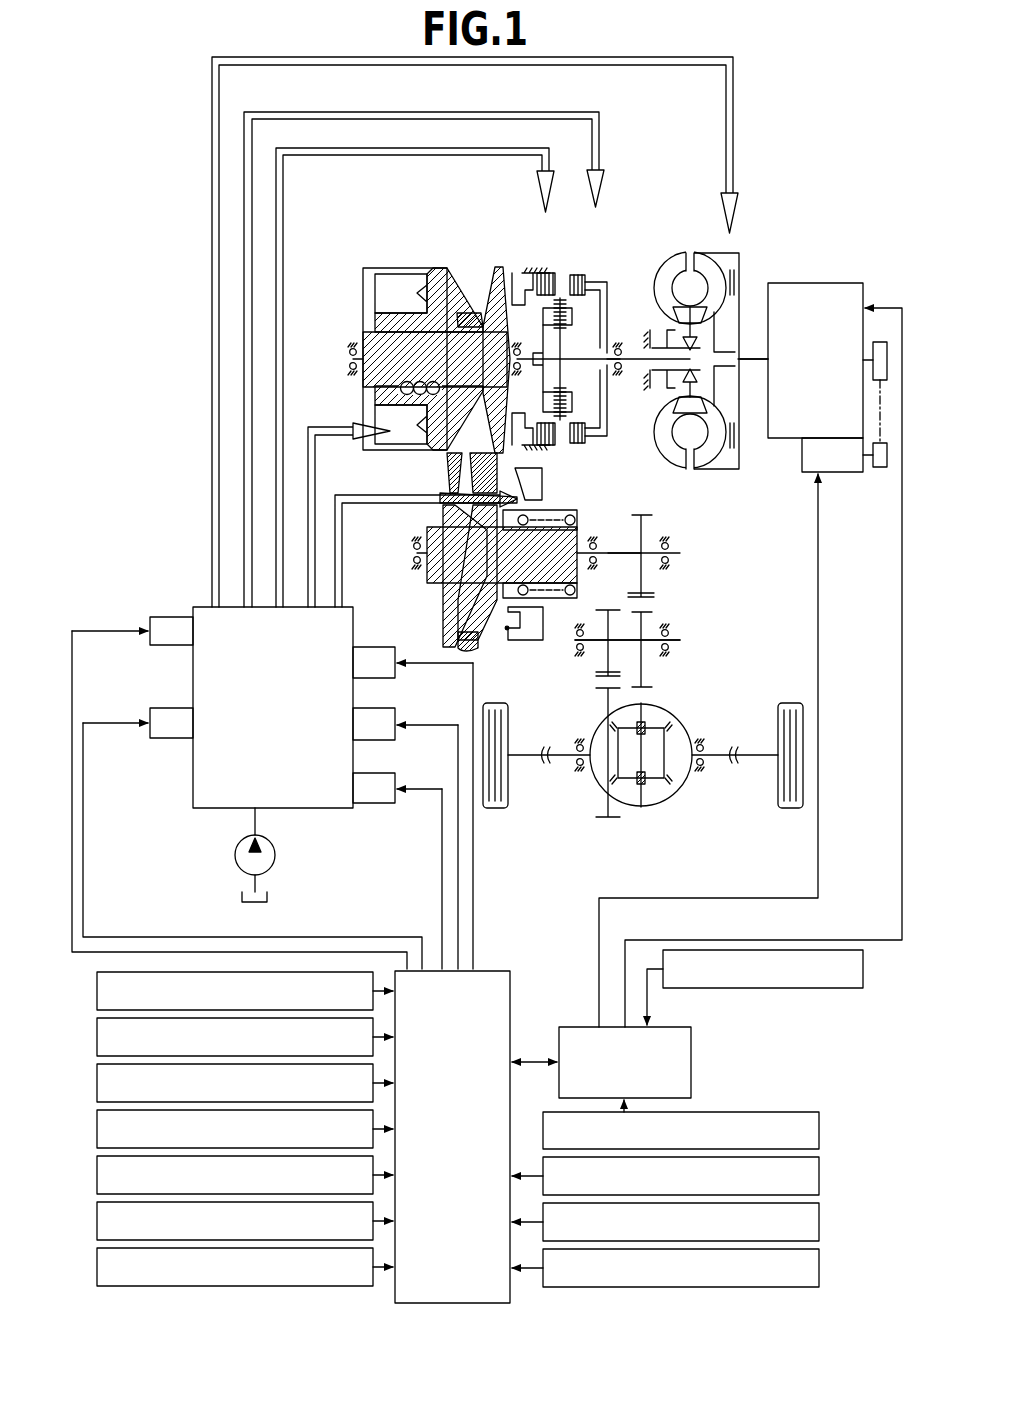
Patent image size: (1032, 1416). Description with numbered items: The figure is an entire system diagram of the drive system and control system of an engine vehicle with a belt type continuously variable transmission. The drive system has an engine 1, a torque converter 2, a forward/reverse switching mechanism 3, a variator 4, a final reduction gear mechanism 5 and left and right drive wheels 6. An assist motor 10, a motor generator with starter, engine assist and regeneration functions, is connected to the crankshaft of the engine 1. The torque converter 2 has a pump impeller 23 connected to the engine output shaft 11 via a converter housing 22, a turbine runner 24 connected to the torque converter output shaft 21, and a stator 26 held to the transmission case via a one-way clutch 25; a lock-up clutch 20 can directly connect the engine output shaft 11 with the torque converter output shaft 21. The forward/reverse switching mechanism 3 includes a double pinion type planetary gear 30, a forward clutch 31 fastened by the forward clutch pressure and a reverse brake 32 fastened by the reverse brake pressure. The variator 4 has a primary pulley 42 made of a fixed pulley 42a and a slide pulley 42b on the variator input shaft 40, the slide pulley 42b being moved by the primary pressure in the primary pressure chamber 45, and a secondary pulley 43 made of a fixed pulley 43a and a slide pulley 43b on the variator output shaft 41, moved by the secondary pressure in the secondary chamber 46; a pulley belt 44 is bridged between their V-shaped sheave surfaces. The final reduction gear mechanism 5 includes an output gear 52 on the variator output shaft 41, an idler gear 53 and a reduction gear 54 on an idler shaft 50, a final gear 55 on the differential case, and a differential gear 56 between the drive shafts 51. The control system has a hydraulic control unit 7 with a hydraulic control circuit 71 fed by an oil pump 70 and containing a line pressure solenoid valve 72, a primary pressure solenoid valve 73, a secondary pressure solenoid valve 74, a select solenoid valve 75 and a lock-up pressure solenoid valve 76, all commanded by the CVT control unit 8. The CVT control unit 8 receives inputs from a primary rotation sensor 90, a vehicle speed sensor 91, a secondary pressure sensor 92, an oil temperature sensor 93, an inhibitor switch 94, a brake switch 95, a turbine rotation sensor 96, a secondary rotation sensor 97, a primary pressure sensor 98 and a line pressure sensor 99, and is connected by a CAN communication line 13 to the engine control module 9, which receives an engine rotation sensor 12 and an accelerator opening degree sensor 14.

The engine 1 is at (814, 280).
The torque converter 2 is at (688, 250).
The forward/reverse switching mechanism 3 is at (548, 260).
The variator 4 is at (407, 258).
The final reduction gear mechanism 5 is at (680, 618).
The drive wheels 6 is at (500, 811).
The hydraulic control unit 7 is at (163, 575).
The CVT control unit 8 is at (497, 967).
The engine control module 9 is at (693, 1058).
The assist motor 10 is at (830, 476).
The engine output shaft 11 is at (752, 362).
The engine rotation sensor 12 is at (830, 989).
The CAN communication line 13 is at (538, 1058).
The accelerator opening degree sensor 14 is at (820, 1133).
The lock-up clutch 20 is at (732, 309).
The torque converter output shaft 21 is at (635, 362).
The converter housing 22 is at (728, 250).
The pump impeller 23 is at (665, 262).
The turbine runner 24 is at (712, 452).
The one-way clutch 25 is at (690, 343).
The stator 26 is at (688, 311).
The double pinion type planetary gear 30 is at (560, 421).
The forward clutch 31 is at (580, 272).
The reverse brake 32 is at (546, 265).
The variator input shaft 40 is at (412, 368).
The variator output shaft 41 is at (619, 550).
The primary pulley 42 is at (400, 323).
The fixed pulley 42a is at (483, 265).
The slide pulley 42b is at (448, 266).
The secondary pulley 43 is at (517, 581).
The fixed pulley 43a is at (440, 604).
The slide pulley 43b is at (476, 648).
The pulley belt 44 is at (462, 469).
The primary pressure chamber 45 is at (394, 282).
The secondary chamber 46 is at (510, 630).
The idler shaft 50 is at (650, 644).
The drive shafts 51 is at (548, 750).
The output gear 52 is at (650, 540).
The idler gear 53 is at (648, 612).
The reduction gear 54 is at (598, 611).
The final gear 55 is at (603, 692).
The differential gear 56 is at (685, 716).
The oil pump 70 is at (236, 860).
The hydraulic control circuit 71 is at (192, 804).
The line pressure solenoid valve 72 is at (370, 808).
The primary pressure solenoid valve 73 is at (392, 742).
The secondary pressure solenoid valve 74 is at (392, 680).
The select solenoid valve 75 is at (172, 739).
The lock-up pressure solenoid valve 76 is at (172, 646).
The primary rotation sensor 90 is at (96, 992).
The vehicle speed sensor 91 is at (96, 1038).
The secondary pressure sensor 92 is at (96, 1084).
The oil temperature sensor 93 is at (96, 1130).
The inhibitor switch 94 is at (96, 1176).
The brake switch 95 is at (96, 1222).
The turbine rotation sensor 96 is at (96, 1268).
The secondary rotation sensor 97 is at (820, 1179).
The primary pressure sensor 98 is at (820, 1225).
The line pressure sensor 99 is at (820, 1271).